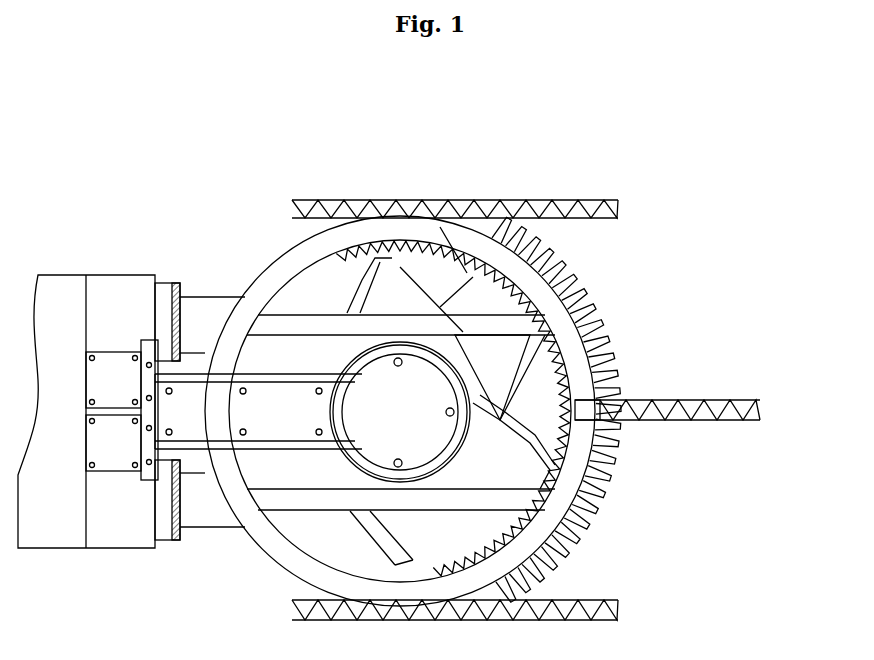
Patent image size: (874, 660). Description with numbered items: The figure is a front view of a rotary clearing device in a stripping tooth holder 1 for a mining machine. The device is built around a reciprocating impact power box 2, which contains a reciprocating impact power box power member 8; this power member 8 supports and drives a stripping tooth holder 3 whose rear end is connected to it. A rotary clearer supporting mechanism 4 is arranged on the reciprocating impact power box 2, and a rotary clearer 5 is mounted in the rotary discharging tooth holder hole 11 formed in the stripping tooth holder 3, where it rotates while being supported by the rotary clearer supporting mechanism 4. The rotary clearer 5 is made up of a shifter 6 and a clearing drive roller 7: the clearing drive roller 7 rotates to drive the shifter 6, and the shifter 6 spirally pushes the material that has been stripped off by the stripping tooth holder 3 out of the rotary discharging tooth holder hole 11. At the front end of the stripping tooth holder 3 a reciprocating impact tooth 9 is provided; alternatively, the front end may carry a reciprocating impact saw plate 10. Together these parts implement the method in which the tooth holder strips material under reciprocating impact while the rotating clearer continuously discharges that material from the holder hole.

The rotary clearing device in a stripping tooth holder 1 is at (390, 411).
The reciprocating impact power box 2 is at (133, 297).
The stripping tooth holder 3 is at (258, 280).
The rotary clearer supporting mechanism 4 is at (337, 392).
The rotary clearer 5 is at (400, 343).
The shifter 6 is at (457, 283).
The clearing drive roller 7 is at (467, 393).
The reciprocating impact power box power member 8 is at (213, 313).
The reciprocating impact tooth 9 is at (632, 447).
The reciprocating impact saw plate 10 is at (540, 220).
The rotary discharging tooth holder hole 11 is at (542, 420).